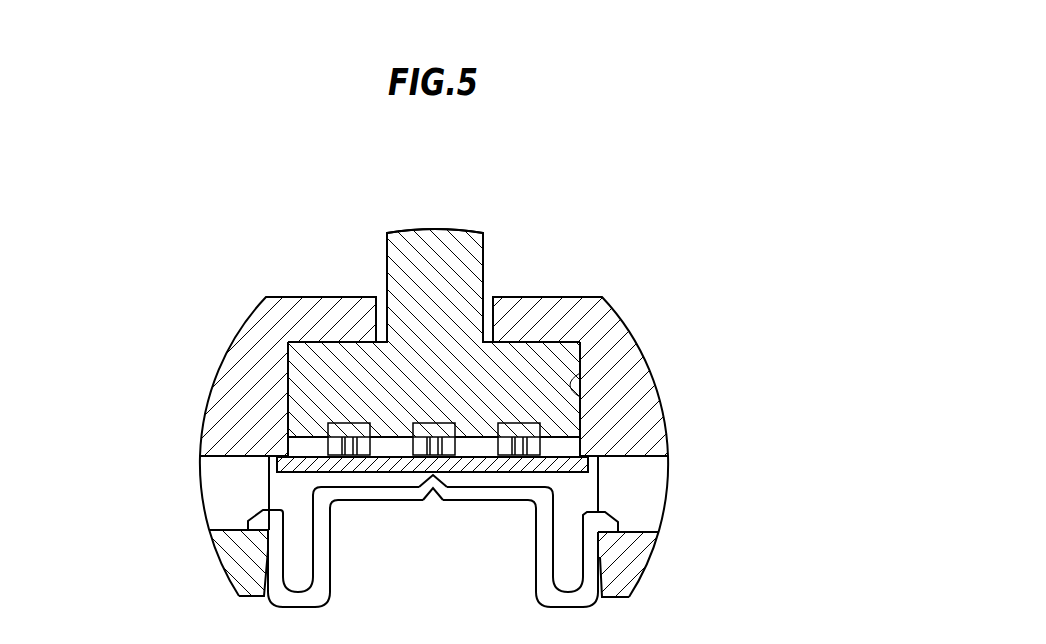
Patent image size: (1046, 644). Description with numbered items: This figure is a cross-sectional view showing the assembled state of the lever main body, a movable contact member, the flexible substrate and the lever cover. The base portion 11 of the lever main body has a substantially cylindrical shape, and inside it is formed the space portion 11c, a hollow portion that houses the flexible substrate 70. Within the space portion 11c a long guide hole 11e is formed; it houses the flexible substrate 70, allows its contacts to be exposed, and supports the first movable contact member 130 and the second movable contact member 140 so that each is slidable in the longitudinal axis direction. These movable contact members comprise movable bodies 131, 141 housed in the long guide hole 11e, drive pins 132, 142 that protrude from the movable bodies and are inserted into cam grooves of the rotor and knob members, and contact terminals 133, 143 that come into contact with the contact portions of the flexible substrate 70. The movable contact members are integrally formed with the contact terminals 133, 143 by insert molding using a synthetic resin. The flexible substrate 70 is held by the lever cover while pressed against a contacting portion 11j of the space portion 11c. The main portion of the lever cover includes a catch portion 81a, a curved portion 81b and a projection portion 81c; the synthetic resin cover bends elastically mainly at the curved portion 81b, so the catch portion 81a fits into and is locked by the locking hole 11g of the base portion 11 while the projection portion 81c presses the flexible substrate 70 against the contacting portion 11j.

The base portion 11 is at (645, 360).
The space portion 11c is at (293, 493).
The long guide hole 11e is at (592, 338).
The locking hole 11g is at (223, 502).
The contacting portion 11j is at (285, 453).
The flexible substrate 70 is at (590, 470).
The catch portion 81a is at (273, 523).
The curved portion 81b is at (325, 560).
The projection portion 81c is at (432, 478).
The first movable contact member 130 is at (437, 312).
The second movable contact member 140 is at (437, 312).
The movable body 131 is at (383, 326).
The movable body 141 is at (335, 357).
The drive pin 132 is at (380, 256).
The drive pin 142 is at (402, 249).
The contact terminal 133 is at (508, 340).
The contact terminal 143 is at (518, 430).